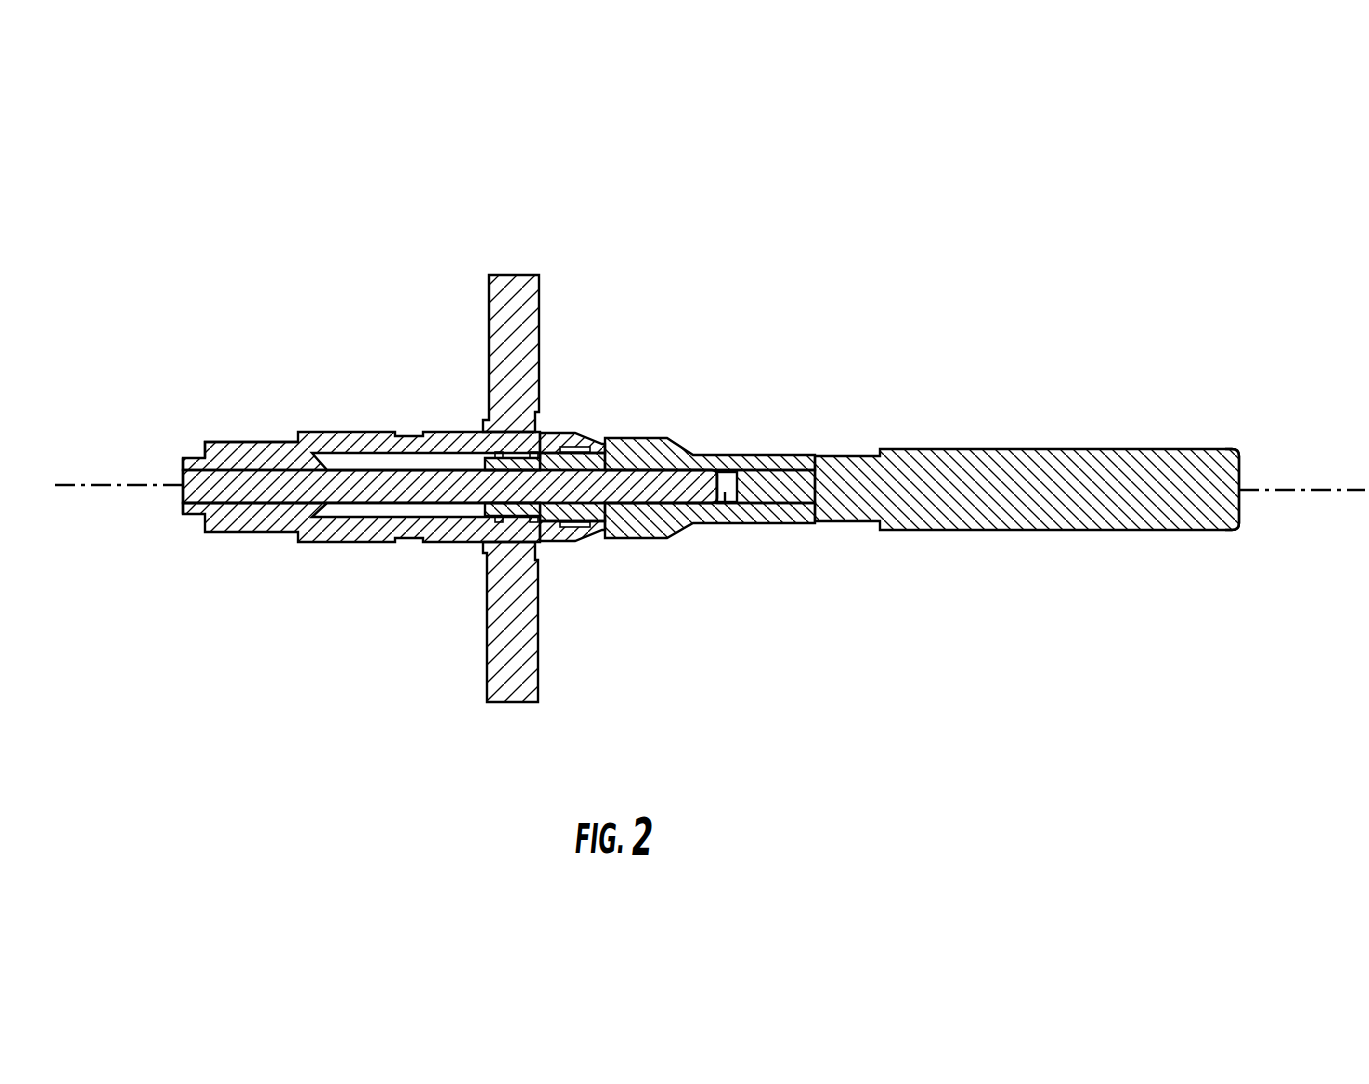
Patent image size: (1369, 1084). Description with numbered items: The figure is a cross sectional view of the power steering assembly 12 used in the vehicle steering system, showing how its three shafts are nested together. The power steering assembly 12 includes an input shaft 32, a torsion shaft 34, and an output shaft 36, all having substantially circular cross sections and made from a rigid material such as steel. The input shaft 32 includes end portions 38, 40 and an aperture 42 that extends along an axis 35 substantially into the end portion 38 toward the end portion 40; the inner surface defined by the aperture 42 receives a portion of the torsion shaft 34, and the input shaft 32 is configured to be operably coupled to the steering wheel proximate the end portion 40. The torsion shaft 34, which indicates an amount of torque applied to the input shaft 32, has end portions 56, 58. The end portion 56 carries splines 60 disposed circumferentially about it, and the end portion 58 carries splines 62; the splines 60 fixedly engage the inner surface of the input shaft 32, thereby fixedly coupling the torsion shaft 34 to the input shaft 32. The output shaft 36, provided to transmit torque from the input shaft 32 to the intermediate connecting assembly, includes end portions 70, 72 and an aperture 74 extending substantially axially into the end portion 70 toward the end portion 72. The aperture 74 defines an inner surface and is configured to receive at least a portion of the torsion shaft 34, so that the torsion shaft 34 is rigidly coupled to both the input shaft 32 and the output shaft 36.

The power steering assembly 12 is at (710, 421).
The input shaft 32 is at (1057, 460).
The torsion shaft 34 is at (325, 580).
The axis 35 is at (1325, 535).
The output shaft 36 is at (322, 465).
The end portion 38 is at (710, 491).
The end portion 40 is at (1270, 407).
The aperture 42 is at (725, 503).
The end portion 56 is at (780, 420).
The end portion 58 is at (183, 481).
The splines 60 is at (681, 503).
The splines 62 is at (198, 583).
The end portion 70 is at (572, 433).
The end portion 72 is at (227, 442).
The aperture 74 is at (403, 468).